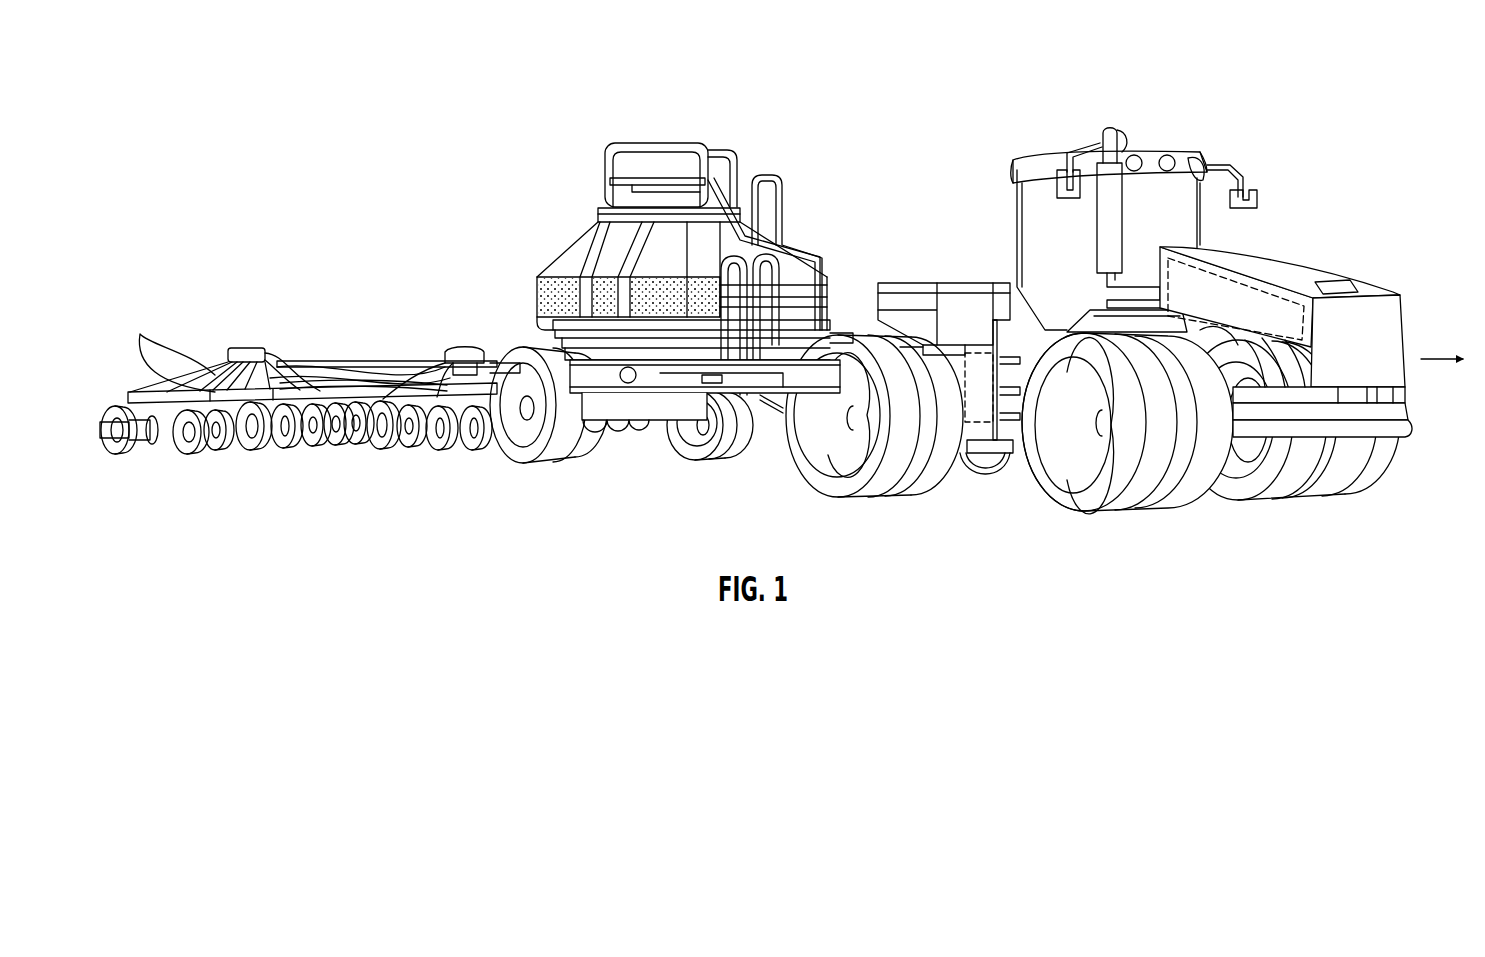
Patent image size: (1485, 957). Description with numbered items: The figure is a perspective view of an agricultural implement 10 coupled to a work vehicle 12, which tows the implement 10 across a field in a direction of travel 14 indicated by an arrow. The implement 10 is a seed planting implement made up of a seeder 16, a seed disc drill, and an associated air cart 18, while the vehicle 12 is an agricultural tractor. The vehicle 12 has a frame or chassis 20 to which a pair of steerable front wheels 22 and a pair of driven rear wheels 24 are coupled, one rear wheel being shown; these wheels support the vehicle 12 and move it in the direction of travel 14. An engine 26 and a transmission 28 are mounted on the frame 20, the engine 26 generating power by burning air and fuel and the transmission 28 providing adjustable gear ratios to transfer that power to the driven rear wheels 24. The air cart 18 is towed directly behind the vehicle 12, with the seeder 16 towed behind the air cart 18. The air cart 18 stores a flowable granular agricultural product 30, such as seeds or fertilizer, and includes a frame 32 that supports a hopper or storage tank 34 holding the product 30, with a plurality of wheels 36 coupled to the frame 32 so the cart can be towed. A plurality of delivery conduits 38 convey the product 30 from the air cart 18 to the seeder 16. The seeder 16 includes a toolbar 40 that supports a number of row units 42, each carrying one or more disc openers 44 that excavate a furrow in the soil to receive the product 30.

The agricultural implement 10 is at (418, 176).
The work vehicle 12 is at (1254, 117).
The direction of travel 14 is at (1445, 364).
The seeder 16 is at (205, 298).
The air cart 18 is at (658, 80).
The frame 20 is at (1000, 458).
The front wheels 22 is at (1130, 490).
The rear wheels 24 is at (872, 485).
The engine 26 is at (1258, 268).
The transmission 28 is at (978, 354).
The agricultural product 30 is at (538, 292).
The frame 32 is at (680, 386).
The storage tank 34 is at (578, 252).
The wheels 36 is at (558, 450).
The delivery conduits 38 is at (140, 334).
The toolbar 40 is at (378, 397).
The row units 42 is at (436, 460).
The disc openers 44 is at (250, 456).